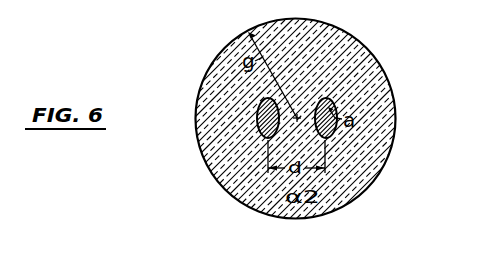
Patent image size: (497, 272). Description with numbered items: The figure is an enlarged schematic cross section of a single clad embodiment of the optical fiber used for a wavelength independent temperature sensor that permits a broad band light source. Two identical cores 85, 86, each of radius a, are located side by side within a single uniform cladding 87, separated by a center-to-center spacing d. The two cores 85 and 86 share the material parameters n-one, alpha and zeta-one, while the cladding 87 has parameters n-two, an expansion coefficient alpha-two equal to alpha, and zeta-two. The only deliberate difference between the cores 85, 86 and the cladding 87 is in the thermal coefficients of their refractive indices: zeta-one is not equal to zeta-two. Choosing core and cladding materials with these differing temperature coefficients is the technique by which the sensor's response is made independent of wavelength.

The core 85 is at (262, 125).
The core 86 is at (336, 129).
The cladding 87 is at (352, 46).